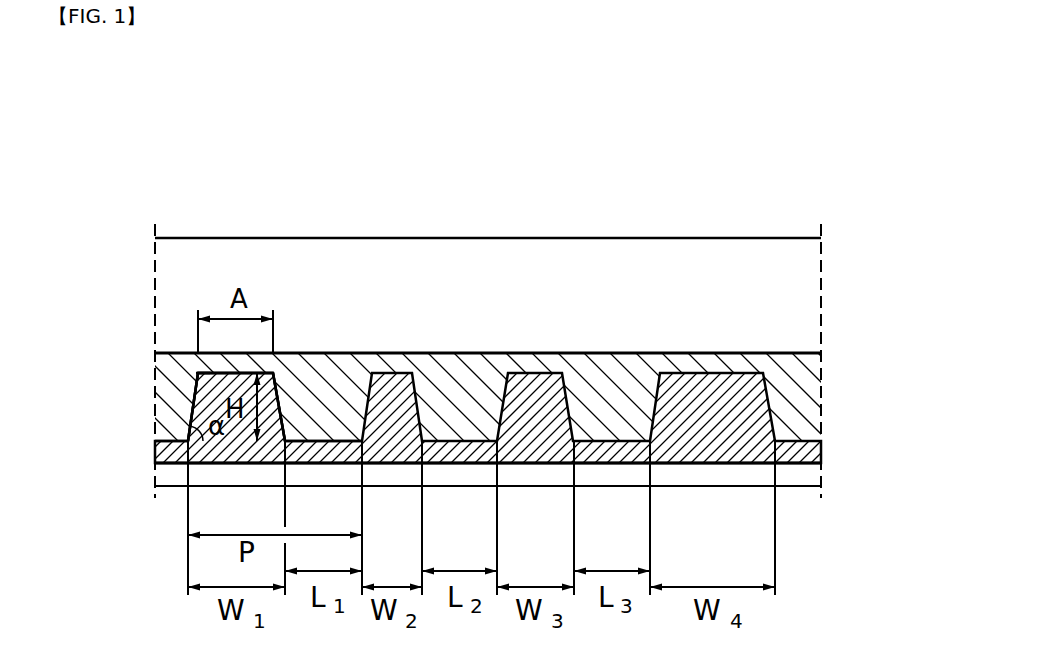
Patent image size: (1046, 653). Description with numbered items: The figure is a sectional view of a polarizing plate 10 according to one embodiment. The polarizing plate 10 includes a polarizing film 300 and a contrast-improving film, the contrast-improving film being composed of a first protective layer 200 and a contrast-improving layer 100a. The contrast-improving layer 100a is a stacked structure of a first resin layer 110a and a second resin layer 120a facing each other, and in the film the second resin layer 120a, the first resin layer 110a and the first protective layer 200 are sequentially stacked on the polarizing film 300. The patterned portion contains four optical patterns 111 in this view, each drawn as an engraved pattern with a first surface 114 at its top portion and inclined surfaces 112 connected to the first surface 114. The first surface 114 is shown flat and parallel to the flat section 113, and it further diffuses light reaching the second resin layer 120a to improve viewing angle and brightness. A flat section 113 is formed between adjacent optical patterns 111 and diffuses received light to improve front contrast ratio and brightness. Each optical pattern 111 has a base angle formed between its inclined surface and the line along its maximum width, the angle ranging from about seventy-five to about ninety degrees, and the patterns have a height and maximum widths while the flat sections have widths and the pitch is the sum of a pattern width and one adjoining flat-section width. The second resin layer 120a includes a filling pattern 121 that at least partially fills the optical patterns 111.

The polarizing plate 10 is at (775, 187).
The first protective layer 200 is at (796, 296).
The contrast-improving layer 100a is at (827, 354).
The first resin layer 110a is at (165, 378).
The optical pattern 111 is at (278, 374).
The inclined surface 112 is at (193, 406).
The flat section 113 is at (322, 448).
The first surface 114 is at (231, 373).
The filling pattern 121 is at (198, 373).
The second resin layer 120a is at (160, 453).
The polarizing film 300 is at (796, 476).